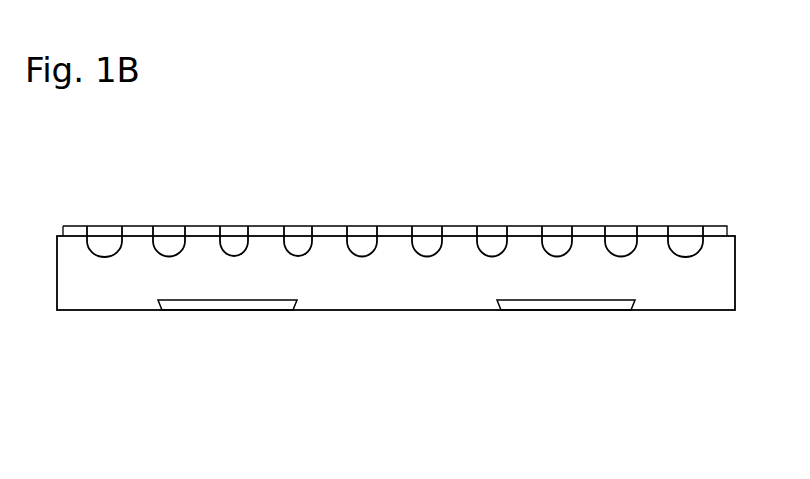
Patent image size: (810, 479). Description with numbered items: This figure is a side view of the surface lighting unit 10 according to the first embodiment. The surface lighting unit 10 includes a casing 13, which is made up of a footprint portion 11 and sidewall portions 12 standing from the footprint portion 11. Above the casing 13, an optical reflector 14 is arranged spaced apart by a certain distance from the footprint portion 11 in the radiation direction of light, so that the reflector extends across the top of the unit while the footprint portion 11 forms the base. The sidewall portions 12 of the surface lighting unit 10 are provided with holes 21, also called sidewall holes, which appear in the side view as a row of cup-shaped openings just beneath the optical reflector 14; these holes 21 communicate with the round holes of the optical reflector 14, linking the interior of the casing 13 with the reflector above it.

The surface lighting unit 10 is at (720, 164).
The footprint portion 11 is at (510, 303).
The sidewall portion 12 is at (582, 344).
The casing 13 is at (412, 375).
The optical reflector 14 is at (648, 229).
The hole 21 is at (492, 238).